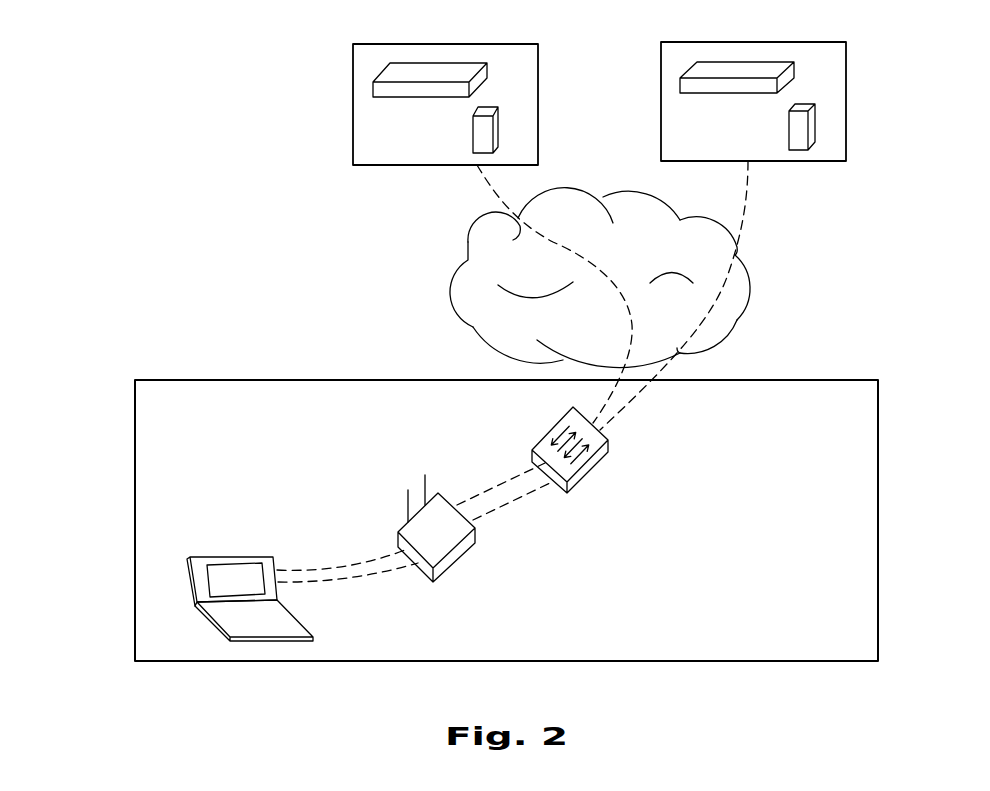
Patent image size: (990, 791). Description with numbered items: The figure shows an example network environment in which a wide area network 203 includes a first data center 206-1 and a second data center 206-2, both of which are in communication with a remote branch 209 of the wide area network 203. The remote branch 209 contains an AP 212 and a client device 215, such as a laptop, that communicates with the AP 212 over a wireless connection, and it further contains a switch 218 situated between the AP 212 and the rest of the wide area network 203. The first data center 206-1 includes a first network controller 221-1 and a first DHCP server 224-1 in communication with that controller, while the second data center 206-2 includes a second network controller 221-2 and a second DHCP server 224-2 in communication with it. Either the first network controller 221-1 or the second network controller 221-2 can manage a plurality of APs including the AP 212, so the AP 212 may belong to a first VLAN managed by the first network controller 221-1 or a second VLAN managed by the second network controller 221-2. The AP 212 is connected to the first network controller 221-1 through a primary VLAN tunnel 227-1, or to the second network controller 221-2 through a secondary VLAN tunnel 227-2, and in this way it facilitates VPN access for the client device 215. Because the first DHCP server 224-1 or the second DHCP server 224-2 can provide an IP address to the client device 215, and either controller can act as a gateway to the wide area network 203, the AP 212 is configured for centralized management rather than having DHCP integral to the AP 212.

The wide area network 203 is at (468, 242).
The first data center 206-1 is at (353, 87).
The second data center 206-2 is at (661, 87).
The remote branch 209 is at (878, 512).
The AP 212 is at (452, 553).
The client device 215 is at (298, 618).
The switch 218 is at (587, 468).
The first network controller 221-1 is at (406, 97).
The second network controller 221-2 is at (704, 93).
The first DHCP server 224-1 is at (498, 123).
The second DHCP server 224-2 is at (815, 120).
The primary VLAN tunnel 227-1 is at (623, 367).
The secondary VLAN tunnel 227-2 is at (668, 368).